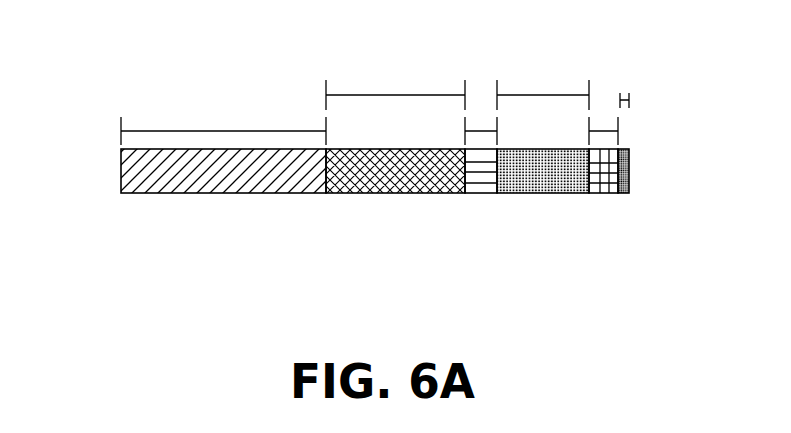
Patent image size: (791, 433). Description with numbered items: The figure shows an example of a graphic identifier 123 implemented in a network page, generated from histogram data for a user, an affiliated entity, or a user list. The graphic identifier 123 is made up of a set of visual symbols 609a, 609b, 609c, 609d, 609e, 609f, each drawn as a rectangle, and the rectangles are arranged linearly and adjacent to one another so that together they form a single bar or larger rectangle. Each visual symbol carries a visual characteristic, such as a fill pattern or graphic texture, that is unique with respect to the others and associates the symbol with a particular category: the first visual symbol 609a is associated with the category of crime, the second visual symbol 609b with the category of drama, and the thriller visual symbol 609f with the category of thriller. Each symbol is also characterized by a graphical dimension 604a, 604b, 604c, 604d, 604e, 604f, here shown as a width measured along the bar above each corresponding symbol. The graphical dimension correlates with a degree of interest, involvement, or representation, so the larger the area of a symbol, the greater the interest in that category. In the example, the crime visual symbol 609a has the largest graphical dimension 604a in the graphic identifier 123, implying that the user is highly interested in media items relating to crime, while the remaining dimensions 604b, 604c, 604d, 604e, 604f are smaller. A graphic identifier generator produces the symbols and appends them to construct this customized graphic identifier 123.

The graphic identifier 123 is at (698, 314).
The graphical dimension 604a is at (178, 122).
The graphical dimension 604b is at (482, 130).
The graphical dimension 604c is at (624, 95).
The graphical dimension 604d is at (573, 95).
The graphical dimension 604e is at (357, 92).
The graphical dimension 604f is at (606, 131).
The first visual symbol 609a is at (187, 182).
The second visual symbol 609b is at (472, 182).
The visual symbol 609c is at (624, 182).
The visual symbol 609d is at (538, 182).
The visual symbol 609e is at (342, 182).
The thriller visual symbol 609f is at (606, 182).